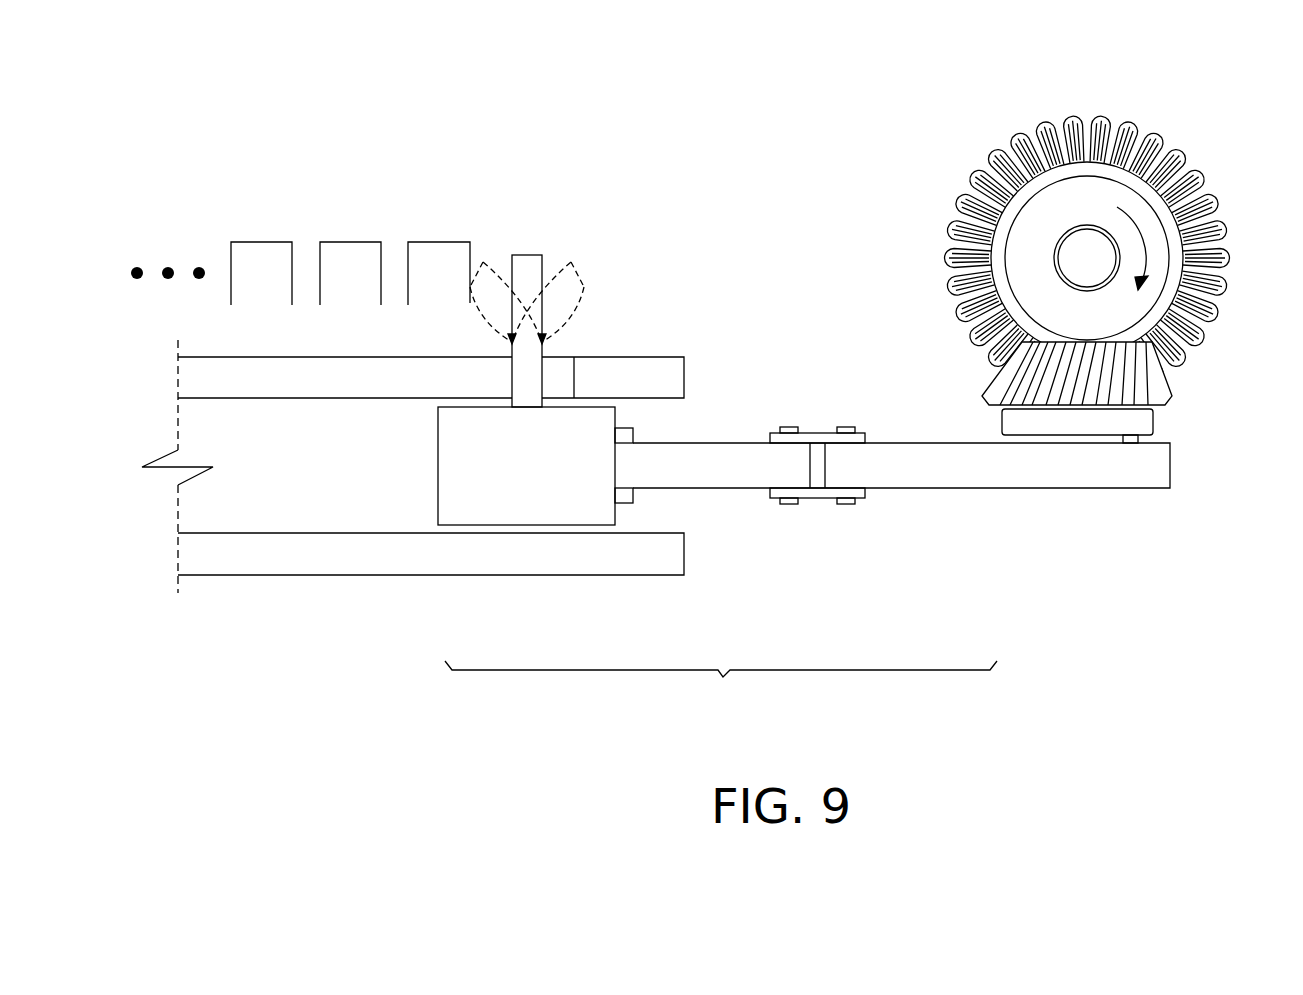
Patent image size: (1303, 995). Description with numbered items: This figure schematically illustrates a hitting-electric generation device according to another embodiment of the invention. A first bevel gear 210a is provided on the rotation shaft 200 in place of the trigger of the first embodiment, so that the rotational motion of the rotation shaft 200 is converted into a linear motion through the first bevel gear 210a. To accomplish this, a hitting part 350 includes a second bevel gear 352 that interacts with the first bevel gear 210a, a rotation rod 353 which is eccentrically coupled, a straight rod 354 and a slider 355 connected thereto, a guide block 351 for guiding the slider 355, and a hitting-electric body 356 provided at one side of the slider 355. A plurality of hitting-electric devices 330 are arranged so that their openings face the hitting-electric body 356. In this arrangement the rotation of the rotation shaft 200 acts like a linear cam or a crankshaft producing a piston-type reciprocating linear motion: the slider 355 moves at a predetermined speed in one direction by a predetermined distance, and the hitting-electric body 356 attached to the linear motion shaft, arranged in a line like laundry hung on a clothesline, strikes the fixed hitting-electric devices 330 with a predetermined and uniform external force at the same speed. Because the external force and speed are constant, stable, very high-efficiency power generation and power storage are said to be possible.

The rotation shaft 200 is at (1107, 235).
The first bevel gear 210a is at (1198, 178).
The hitting-electric devices 330 is at (236, 253).
The hitting part 350 is at (721, 685).
The guide block 351 is at (457, 555).
The second bevel gear 352 is at (1177, 388).
The rotation rod 353 is at (995, 468).
The straight rod 354 is at (728, 477).
The slider 355 is at (557, 503).
The hitting-electric body 356 is at (527, 265).